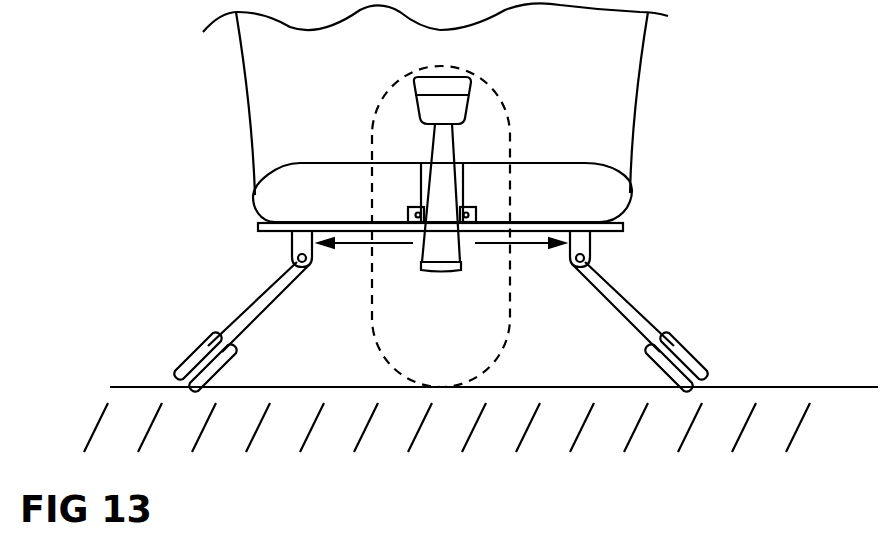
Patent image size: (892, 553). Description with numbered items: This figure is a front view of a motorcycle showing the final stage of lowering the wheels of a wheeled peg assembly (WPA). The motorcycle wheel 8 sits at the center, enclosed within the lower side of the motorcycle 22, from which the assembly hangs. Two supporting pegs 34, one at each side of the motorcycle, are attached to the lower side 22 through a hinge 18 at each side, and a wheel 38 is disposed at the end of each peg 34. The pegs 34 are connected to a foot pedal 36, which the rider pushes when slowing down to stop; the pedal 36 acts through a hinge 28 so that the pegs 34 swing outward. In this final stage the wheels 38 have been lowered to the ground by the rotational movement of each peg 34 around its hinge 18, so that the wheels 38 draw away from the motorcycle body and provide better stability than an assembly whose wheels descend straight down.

The wheel of motorcycle 8 is at (495, 317).
The hinge of WPA 18 is at (305, 264).
The lower side of motorcycle 22 is at (606, 194).
The hinge of WPA 28 is at (478, 216).
The peg 34 is at (255, 308).
The pedal 36 is at (445, 163).
The wheel of WPA 38 is at (200, 347).